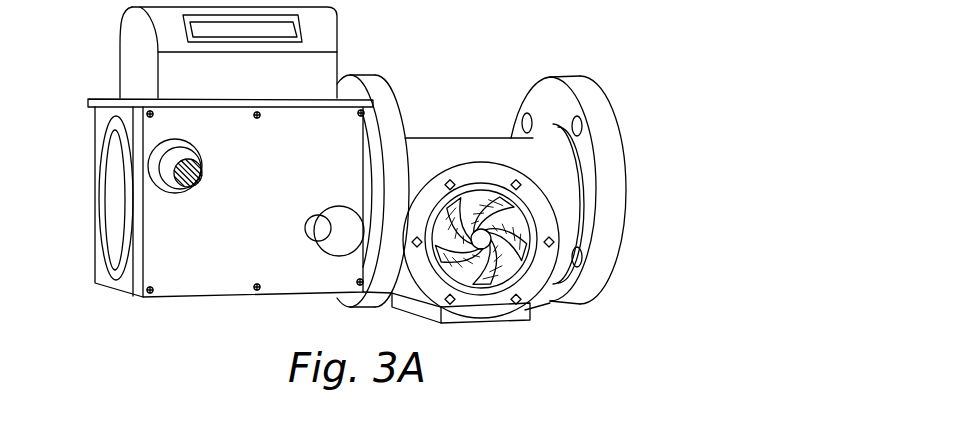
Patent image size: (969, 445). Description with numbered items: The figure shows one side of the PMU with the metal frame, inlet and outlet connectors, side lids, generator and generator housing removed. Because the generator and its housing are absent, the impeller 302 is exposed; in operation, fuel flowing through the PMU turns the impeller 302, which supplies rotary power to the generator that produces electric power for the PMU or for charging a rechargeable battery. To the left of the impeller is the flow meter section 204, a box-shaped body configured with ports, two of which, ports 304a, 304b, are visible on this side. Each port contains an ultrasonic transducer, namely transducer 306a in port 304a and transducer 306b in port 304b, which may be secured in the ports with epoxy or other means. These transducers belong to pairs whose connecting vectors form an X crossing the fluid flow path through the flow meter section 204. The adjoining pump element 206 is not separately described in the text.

The flow meter section 204 is at (203, 189).
The pump assembly 206 is at (501, 214).
The impeller 302 is at (467, 280).
The port 304a is at (159, 159).
The port 304b is at (287, 220).
The ultrasonic transducer 306a is at (163, 160).
The ultrasonic transducer 306b is at (337, 255).